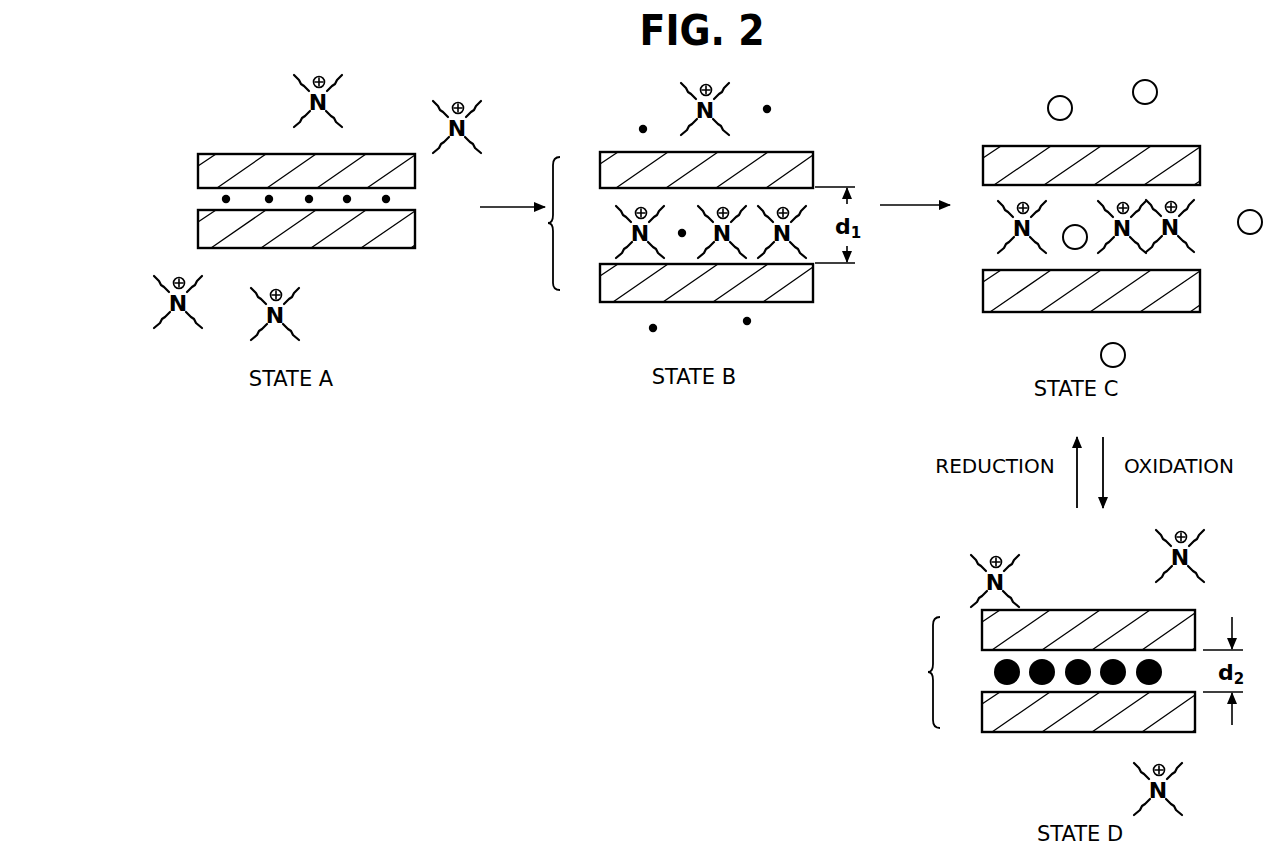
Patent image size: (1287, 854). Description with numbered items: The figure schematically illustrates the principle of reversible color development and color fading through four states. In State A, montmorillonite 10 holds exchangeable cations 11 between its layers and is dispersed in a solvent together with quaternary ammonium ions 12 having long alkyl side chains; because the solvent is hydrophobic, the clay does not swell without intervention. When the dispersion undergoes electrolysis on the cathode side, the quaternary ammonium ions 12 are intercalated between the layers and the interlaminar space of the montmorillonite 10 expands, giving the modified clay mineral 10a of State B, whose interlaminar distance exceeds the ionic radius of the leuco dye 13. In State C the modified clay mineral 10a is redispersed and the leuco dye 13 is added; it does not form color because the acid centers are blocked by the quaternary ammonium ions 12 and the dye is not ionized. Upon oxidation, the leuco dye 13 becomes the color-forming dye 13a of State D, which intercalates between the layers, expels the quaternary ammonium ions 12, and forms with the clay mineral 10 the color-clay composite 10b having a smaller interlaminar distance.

The montmorillonite 10 is at (207, 172).
The modified clay mineral 10a is at (536, 223).
The color-clay composite 10b is at (913, 672).
The exchangeable cations 11 is at (222, 200).
The quaternary ammonium ions 12 is at (347, 85).
The leuco dye 13 is at (1062, 102).
The color-forming dye 13a is at (993, 672).